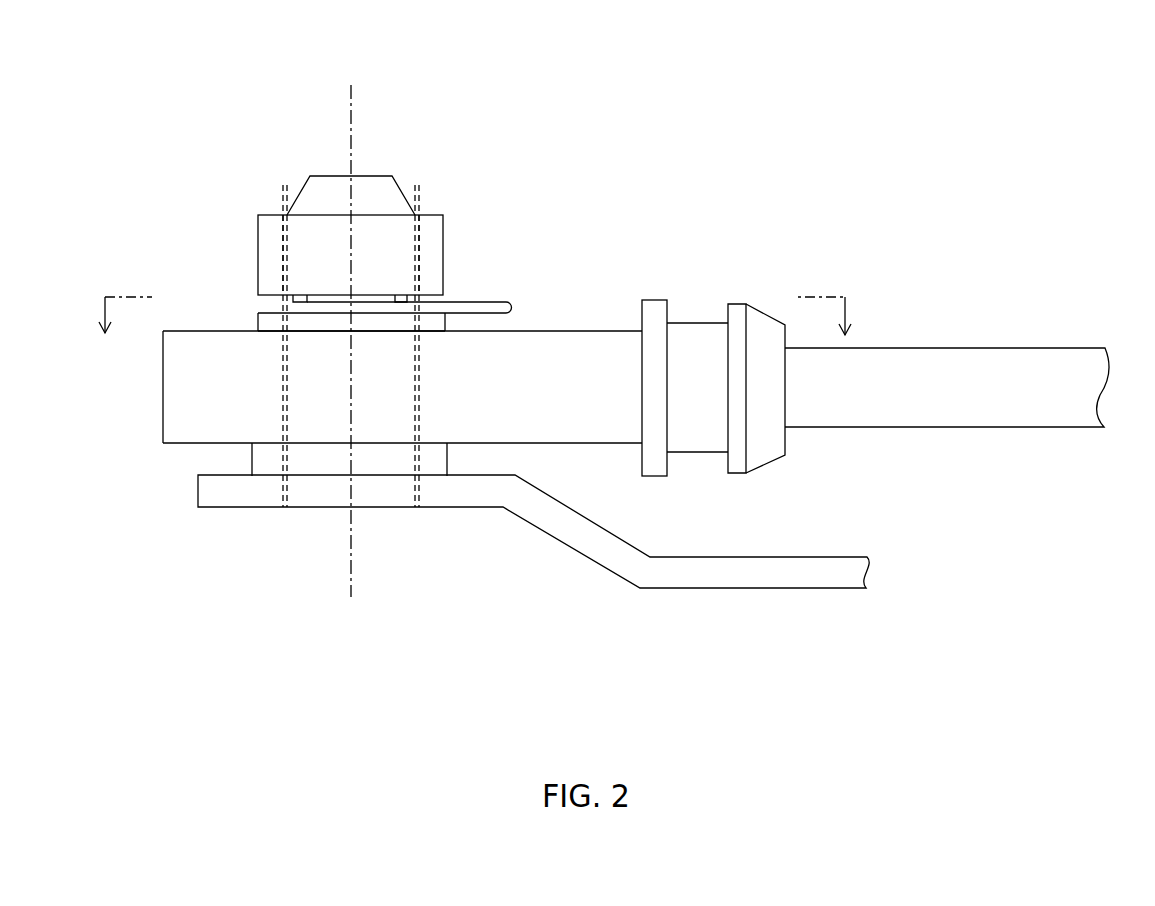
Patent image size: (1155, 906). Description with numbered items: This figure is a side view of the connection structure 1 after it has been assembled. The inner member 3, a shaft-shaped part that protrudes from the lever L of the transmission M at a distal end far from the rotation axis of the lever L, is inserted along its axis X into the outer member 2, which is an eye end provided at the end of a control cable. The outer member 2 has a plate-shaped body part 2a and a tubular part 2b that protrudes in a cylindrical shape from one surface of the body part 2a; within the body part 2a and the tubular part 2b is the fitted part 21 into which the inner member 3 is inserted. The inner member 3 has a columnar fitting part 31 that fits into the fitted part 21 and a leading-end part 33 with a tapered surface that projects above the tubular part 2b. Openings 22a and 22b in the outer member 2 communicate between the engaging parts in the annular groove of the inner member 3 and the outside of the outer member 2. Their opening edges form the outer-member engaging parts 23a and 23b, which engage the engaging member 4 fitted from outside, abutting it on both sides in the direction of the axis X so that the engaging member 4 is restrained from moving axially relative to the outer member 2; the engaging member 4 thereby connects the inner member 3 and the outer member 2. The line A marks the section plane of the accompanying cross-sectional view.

The connection structure 1 is at (142, 128).
The outer member 2 is at (245, 205).
The body part 2a is at (585, 353).
The tubular part 2b is at (430, 238).
The fitted part 21 is at (287, 388).
The opening 22a is at (262, 307).
The opening 22b is at (452, 297).
The outer-member engaging part 23a is at (287, 303).
The outer-member engaging part 23b is at (432, 294).
The inner member 3 is at (408, 183).
The fitting part 31 is at (323, 237).
The leading-end part 33 is at (375, 192).
The engaging member 4 is at (502, 300).
The mounted member M is at (1003, 90).
The lever L is at (734, 573).
The axis X is at (351, 542).
The section line A- A is at (473, 303).